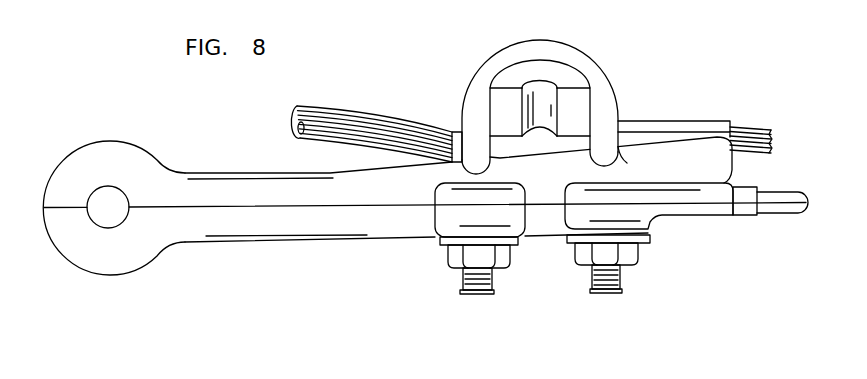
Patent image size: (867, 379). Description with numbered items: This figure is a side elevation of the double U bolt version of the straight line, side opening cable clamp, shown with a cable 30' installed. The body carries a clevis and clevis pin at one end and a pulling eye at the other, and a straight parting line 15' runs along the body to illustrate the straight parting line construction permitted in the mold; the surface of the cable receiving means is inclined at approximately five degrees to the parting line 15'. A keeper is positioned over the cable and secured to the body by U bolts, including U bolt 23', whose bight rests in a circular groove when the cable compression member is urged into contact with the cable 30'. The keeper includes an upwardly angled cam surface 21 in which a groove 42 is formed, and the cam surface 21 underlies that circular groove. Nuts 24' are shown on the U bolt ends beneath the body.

The parting line 15' is at (424, 208).
The cable 30' is at (531, 118).
The U bolt 23' is at (540, 95).
The cam surface 21 is at (577, 103).
The groove 42 is at (538, 92).
The nuts and bolts 24' is at (545, 269).